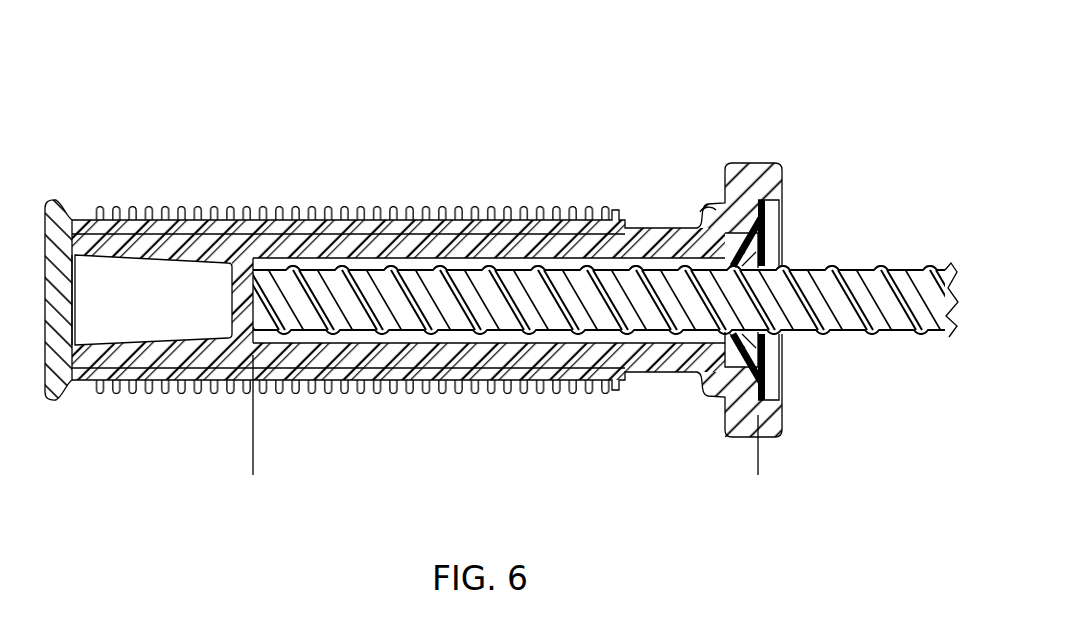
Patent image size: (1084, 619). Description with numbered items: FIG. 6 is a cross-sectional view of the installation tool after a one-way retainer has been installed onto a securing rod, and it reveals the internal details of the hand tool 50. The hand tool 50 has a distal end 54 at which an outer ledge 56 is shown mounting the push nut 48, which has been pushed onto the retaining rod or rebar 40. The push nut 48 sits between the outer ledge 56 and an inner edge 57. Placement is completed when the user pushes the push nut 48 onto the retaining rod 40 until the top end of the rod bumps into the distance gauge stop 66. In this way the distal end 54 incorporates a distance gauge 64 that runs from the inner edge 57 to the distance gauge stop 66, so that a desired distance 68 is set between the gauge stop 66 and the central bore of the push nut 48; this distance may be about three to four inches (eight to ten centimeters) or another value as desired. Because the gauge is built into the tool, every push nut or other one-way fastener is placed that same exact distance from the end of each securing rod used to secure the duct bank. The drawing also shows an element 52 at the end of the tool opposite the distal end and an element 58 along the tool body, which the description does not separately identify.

The retaining rod 40 is at (898, 270).
The push nut 48 is at (767, 387).
The hand tool 50 is at (561, 80).
The end cap 52 is at (50, 402).
The distal end 54 is at (785, 183).
The outer ledge 56 is at (740, 205).
The inner edge 57 is at (760, 248).
The ribbed sleeve 58 is at (327, 210).
The distance gauge 64 is at (638, 266).
The distance gauge stop 66 is at (249, 357).
The desired distance 68 is at (758, 452).